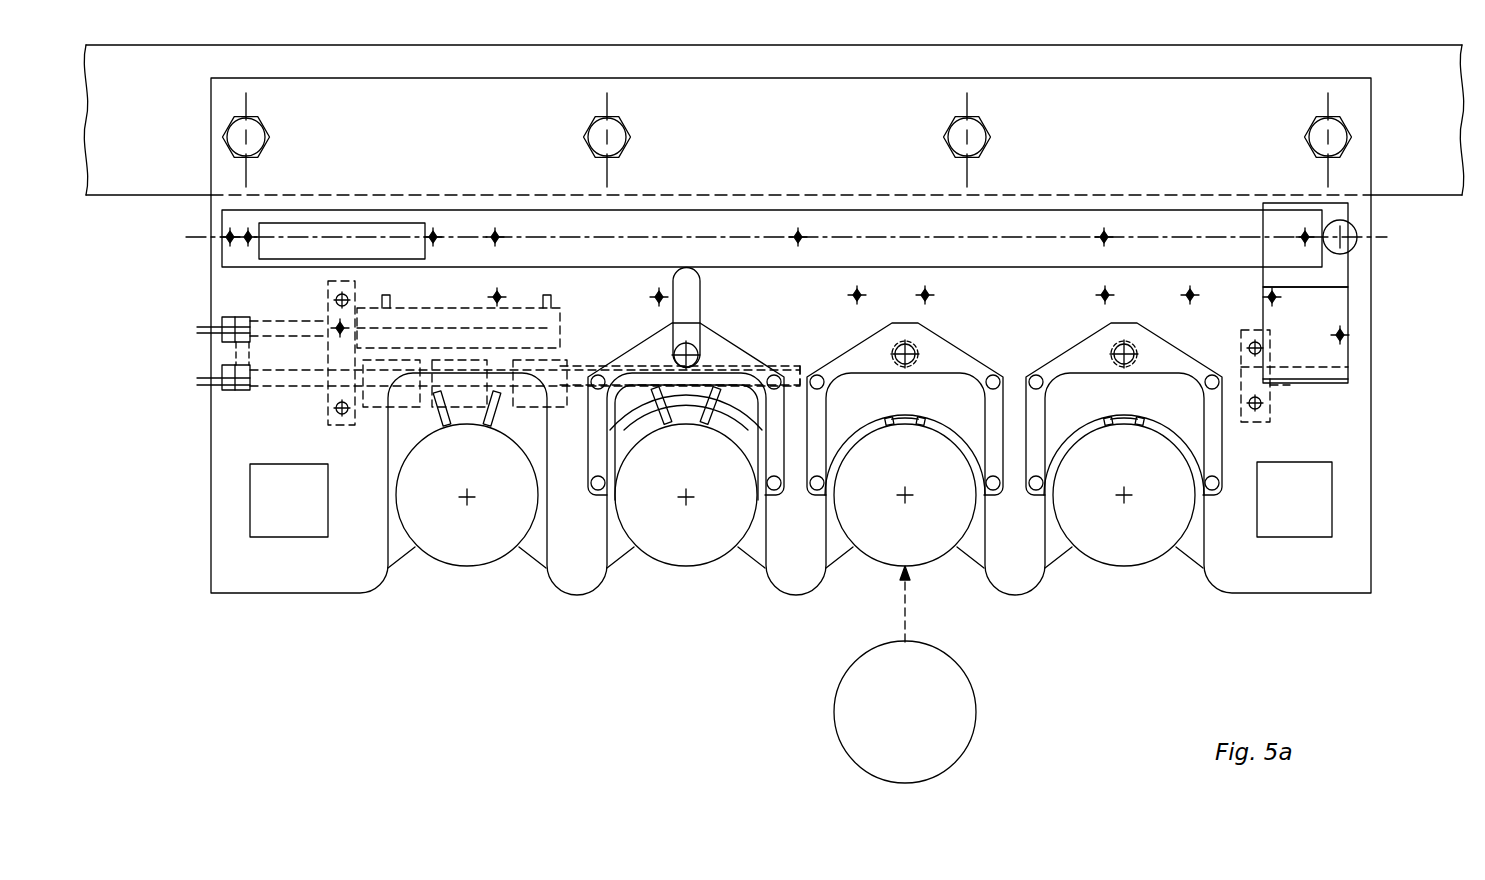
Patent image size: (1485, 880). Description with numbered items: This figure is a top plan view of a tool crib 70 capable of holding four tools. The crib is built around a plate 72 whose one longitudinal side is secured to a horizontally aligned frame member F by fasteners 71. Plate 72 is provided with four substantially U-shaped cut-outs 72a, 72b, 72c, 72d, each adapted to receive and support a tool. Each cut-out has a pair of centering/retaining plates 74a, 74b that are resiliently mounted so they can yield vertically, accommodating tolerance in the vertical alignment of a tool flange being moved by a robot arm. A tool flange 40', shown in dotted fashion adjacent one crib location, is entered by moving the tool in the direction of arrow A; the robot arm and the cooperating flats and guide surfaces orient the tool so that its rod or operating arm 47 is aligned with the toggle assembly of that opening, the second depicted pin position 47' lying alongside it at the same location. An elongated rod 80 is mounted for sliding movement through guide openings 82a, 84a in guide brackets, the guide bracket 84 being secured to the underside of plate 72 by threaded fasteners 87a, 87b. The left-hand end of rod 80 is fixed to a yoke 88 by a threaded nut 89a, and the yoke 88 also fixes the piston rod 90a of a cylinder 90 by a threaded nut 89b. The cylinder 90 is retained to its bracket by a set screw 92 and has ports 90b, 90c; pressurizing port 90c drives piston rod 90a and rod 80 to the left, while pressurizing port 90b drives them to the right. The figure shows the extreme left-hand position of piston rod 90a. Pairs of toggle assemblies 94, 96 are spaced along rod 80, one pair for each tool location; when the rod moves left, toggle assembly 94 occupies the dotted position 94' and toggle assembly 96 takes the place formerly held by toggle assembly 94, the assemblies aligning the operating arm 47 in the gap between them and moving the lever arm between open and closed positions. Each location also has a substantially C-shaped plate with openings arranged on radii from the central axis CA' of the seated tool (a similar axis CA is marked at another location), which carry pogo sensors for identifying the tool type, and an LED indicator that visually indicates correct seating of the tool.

The tool crib 70 is at (1464, 345).
The fasteners 71 is at (260, 130).
The plate 72 is at (1356, 418).
The U-shaped cut-out 72a is at (390, 555).
The U-shaped cut-out 72b is at (607, 555).
The U-shaped cut-out 72c is at (828, 553).
The U-shaped cut-out 72d is at (1046, 555).
The centering/retaining plate 74a is at (1060, 545).
The centering/retaining plate 74b is at (1198, 552).
The elongated rod 80 is at (288, 388).
The guide opening 82a is at (330, 360).
The guide bracket 84 is at (1243, 362).
The guide opening 84a is at (1266, 388).
The threaded fastener 87a is at (1268, 424).
The threaded fastener 87b is at (1248, 328).
The yoke 88 is at (243, 315).
The threaded nut 89a is at (227, 393).
The threaded nut 89b is at (223, 310).
The cylinder 90 is at (457, 308).
The piston rod 90a is at (287, 313).
The port 90b is at (390, 307).
The port 90c is at (551, 307).
The set screw 92 is at (330, 322).
The toggle assembly 94 is at (470, 365).
The toggle assembly position 94' is at (400, 365).
The toggle assembly 96 is at (563, 357).
The operating arm 47 is at (514, 417).
The locating pin 47' is at (421, 418).
The tool flange 40' is at (860, 723).
The arrow A is at (908, 598).
The roller axis CA is at (467, 495).
The central axis CA' is at (686, 495).
The frame member F is at (1422, 183).